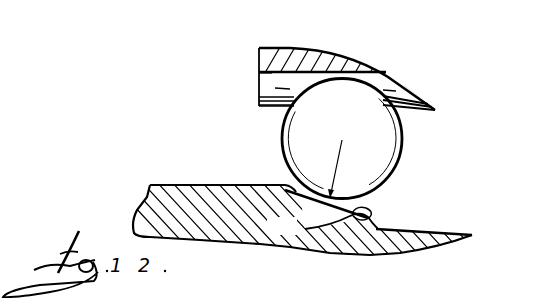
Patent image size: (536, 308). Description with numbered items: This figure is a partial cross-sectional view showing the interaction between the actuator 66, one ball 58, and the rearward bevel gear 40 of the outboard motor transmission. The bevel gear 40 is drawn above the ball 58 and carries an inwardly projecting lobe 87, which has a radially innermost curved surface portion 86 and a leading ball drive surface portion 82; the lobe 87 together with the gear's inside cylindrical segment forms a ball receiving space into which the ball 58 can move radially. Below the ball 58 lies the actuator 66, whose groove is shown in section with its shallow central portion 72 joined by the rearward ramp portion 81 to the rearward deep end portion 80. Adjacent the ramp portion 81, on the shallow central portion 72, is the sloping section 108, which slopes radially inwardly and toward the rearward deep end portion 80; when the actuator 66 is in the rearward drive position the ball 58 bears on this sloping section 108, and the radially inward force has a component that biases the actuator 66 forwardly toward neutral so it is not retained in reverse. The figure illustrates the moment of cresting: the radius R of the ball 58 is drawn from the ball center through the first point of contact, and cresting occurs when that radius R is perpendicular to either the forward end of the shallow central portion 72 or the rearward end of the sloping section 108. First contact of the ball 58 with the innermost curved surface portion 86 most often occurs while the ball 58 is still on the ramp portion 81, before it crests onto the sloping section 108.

The rearward bevel gear 40 is at (290, 52).
The lobe 87 is at (262, 73).
The radially innermost curved surface portion 86 is at (261, 105).
The leading ball drive surface portion 82 is at (406, 91).
The ball 58 is at (363, 153).
The radius of the ball R is at (334, 160).
The actuator 66 is at (162, 206).
The shallow central portion 72 is at (193, 185).
The sloping section 108 is at (290, 190).
The rearward ramp portion 81 is at (322, 222).
The rearward deep end portion 80 is at (431, 229).